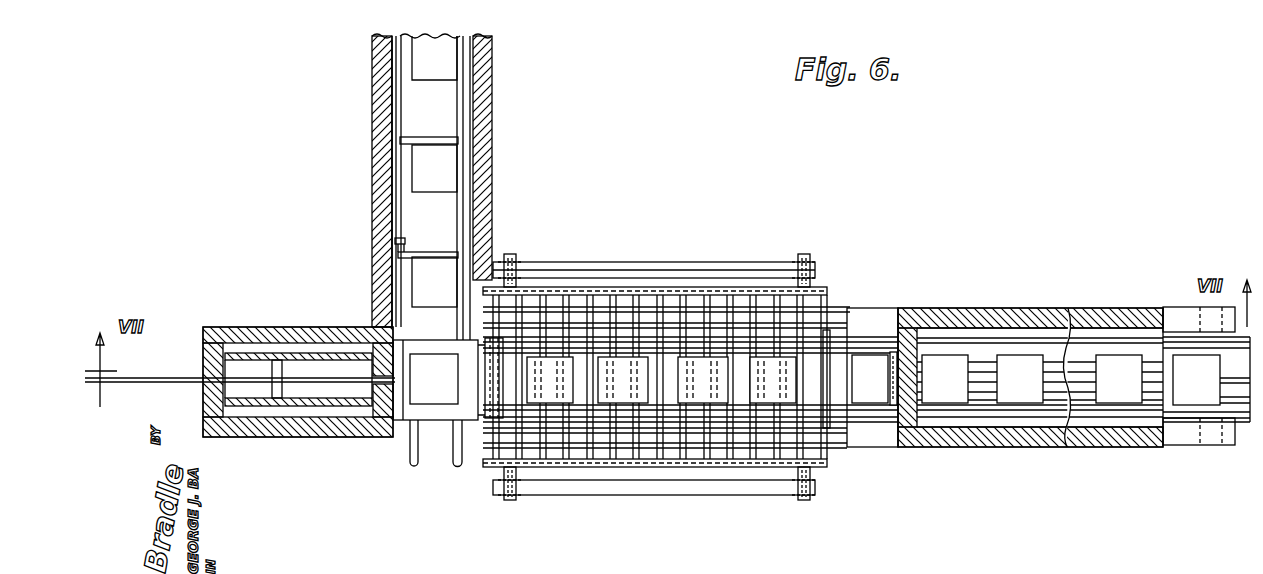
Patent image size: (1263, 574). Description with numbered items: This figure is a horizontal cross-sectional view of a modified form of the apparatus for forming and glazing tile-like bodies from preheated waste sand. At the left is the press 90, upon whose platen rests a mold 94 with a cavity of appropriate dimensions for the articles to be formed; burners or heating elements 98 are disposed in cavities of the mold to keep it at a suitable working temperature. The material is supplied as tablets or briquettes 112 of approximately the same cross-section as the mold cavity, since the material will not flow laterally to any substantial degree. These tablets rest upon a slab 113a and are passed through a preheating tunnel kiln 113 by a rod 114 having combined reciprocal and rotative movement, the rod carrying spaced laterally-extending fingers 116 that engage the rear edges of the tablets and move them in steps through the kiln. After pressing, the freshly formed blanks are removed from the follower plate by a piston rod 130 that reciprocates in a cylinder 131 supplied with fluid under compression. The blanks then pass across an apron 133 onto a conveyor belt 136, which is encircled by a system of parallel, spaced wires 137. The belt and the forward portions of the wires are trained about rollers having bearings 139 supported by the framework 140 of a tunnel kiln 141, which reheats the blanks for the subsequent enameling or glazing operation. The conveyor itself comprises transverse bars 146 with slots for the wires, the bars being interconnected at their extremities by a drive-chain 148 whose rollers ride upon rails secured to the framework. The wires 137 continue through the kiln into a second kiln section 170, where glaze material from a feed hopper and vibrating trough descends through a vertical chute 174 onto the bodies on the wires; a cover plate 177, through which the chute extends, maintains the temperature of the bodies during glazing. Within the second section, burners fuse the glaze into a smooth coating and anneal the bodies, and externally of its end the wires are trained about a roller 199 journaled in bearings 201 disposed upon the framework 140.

The press 90 is at (287, 440).
The mold 94 is at (408, 412).
The burners or heating elements 98 is at (415, 466).
The tablets or briquettes 112 is at (455, 62).
The preheating tunnel kiln 113 is at (486, 117).
The slab 113a is at (455, 200).
The rod 114 is at (393, 103).
The fingers 116 is at (455, 140).
The piston rod 130 is at (310, 378).
The cylinder 131 is at (337, 406).
The apron 133 is at (487, 352).
The conveyor belt 136 is at (619, 292).
The wires 137 is at (985, 400).
The bearings 139 is at (810, 268).
The framework 140 is at (775, 267).
The tunnel kiln 141 is at (838, 440).
The transverse bars 146 is at (775, 305).
The drive-chain 148 is at (570, 290).
The second kiln section 170 is at (1000, 312).
The vertical chute 174 is at (895, 405).
The cover plate 177 is at (874, 325).
The roller 199 is at (1185, 408).
The bearings 201 is at (1207, 445).